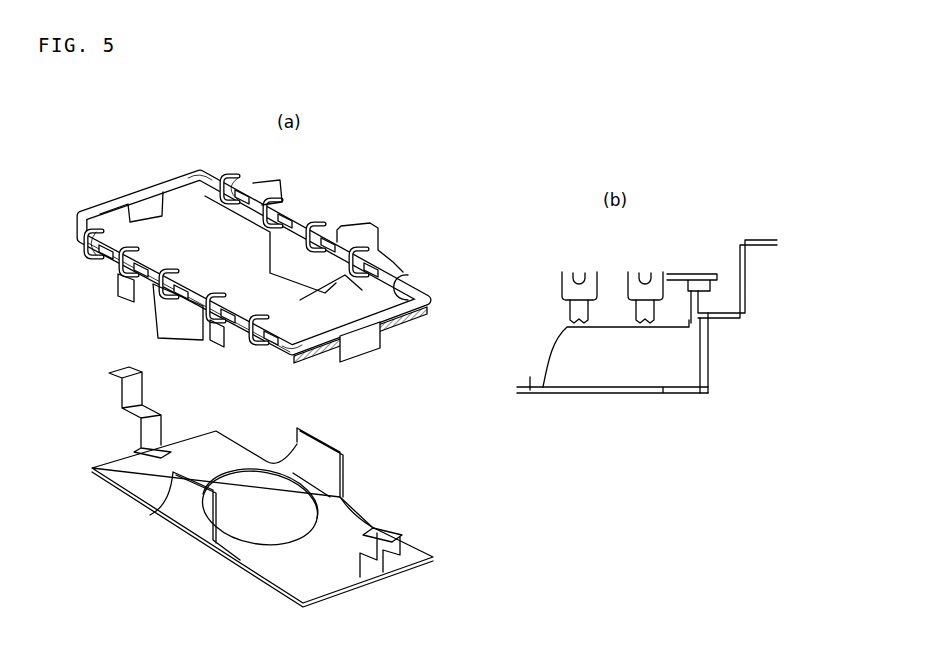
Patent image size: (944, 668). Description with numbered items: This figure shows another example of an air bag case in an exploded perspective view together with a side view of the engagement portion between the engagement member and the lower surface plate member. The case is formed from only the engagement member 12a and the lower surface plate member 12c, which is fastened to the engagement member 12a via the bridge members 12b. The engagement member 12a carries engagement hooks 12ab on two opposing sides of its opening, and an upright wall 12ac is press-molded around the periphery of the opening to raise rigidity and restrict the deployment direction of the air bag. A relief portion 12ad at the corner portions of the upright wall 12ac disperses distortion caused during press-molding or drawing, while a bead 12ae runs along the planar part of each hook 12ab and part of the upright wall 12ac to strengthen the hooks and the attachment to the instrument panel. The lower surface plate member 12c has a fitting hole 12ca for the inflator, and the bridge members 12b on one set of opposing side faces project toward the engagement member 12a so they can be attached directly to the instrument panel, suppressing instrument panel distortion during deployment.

The engagement member 12a is at (314, 212).
The engagement hook 12ab is at (275, 178).
The upright wall 12ac is at (148, 214).
The relief portion 12ad is at (183, 173).
The bead 12ae is at (231, 176).
The bridge member 12b is at (140, 232).
The lower surface plate member 12c is at (317, 587).
The fitting hole 12ca is at (250, 520).